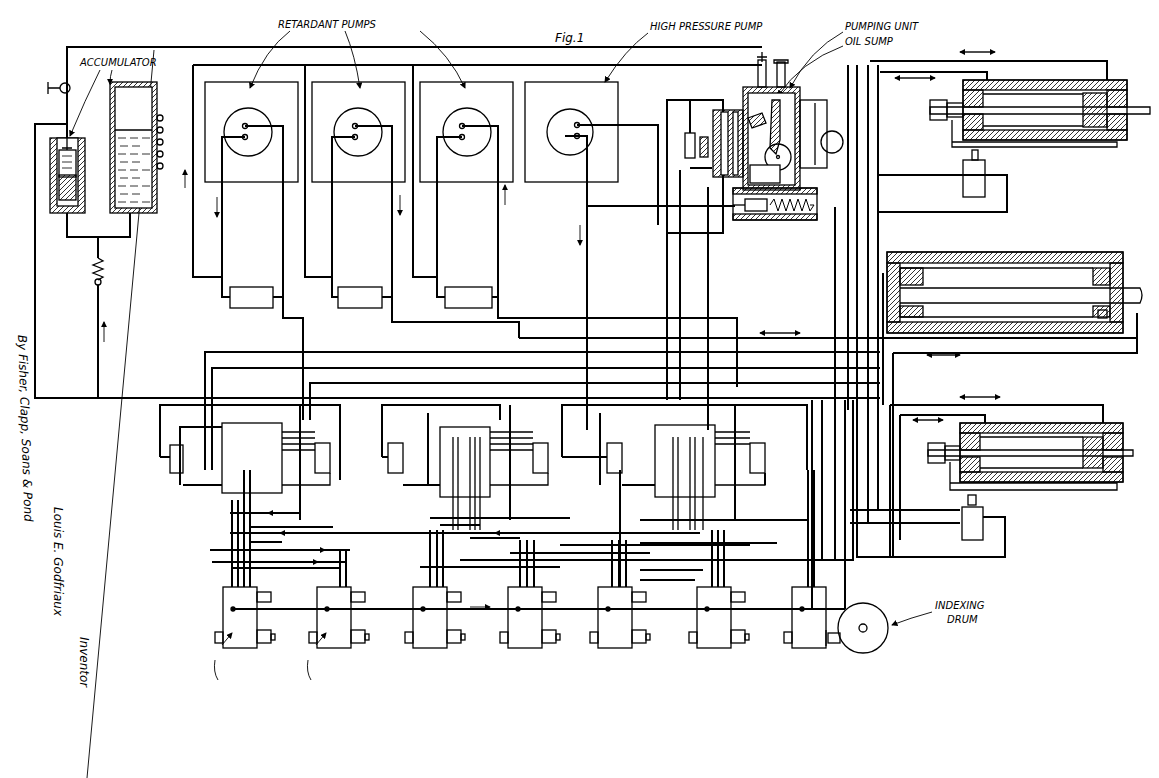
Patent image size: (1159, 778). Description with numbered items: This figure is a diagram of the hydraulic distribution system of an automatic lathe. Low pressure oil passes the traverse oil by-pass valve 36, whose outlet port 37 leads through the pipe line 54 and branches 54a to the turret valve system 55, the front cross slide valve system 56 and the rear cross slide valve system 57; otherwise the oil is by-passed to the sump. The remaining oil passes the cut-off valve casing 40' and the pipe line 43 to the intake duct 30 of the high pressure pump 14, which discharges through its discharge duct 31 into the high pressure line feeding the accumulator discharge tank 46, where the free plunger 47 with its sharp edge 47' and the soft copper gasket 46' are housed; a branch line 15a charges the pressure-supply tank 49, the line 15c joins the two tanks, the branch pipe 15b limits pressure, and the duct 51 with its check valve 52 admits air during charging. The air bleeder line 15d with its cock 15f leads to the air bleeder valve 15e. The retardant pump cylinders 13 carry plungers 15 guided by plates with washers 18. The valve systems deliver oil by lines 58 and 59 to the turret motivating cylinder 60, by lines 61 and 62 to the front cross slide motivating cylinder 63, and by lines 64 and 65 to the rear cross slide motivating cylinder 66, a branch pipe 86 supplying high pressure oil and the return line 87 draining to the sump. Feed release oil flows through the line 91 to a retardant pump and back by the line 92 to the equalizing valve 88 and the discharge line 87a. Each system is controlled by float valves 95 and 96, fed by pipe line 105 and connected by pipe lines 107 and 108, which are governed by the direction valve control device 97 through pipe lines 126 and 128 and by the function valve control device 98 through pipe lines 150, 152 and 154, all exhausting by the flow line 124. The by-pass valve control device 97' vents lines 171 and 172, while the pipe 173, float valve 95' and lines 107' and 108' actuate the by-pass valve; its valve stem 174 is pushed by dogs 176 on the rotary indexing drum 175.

The retardant pump cylinders 13 is at (255, 92).
The high pressure pump 14 is at (620, 90).
The plungers 15 is at (35, 300).
The branch line 15a is at (98, 330).
The branch pipe 15b is at (632, 208).
The line 15c is at (96, 243).
The air bleeder line 15d is at (151, 47).
The air bleeder valve 15e is at (757, 66).
The cock 15f is at (60, 84).
The washers 18 is at (101, 283).
The intake duct 30 is at (244, 124).
The discharge duct 31 is at (247, 140).
The traverse oil by-pass valve 36 is at (727, 112).
The outlet port 37 is at (712, 143).
The cut-off valve casing 40' is at (793, 225).
The pipe line 43 is at (658, 183).
The accumulator discharge tank 46 is at (83, 166).
The soft copper gasket 46' is at (87, 132).
The free plunger 47 is at (47, 175).
The sharp edge 47' is at (43, 187).
The pressure-supply tank 49 is at (110, 103).
The duct 51 is at (784, 222).
The check valve 52 is at (818, 200).
The pipe line 54 is at (712, 282).
The branches 54a is at (760, 518).
The turret valve system 55 is at (462, 427).
The front cross slide valve system 56 is at (660, 425).
The rear cross slide valve system 57 is at (240, 423).
The line 58 is at (535, 336).
The line 59 is at (618, 508).
The turret motivating cylinder 60 is at (1003, 252).
The line 61 is at (754, 548).
The line 62 is at (778, 543).
The front cross slide motivating cylinder 63 is at (1040, 423).
The line 64 is at (385, 383).
The line 65 is at (358, 368).
The rear cross slide motivating cylinder 66 is at (1043, 80).
The branch pipe 86 is at (300, 413).
The return line 87 is at (852, 118).
The discharge line 87a is at (193, 253).
The equalizing valve 88 is at (364, 297).
The line 91 is at (285, 318).
The line 92 is at (224, 237).
The float valve 95 is at (377, 462).
The float valve 95' is at (665, 132).
The float valve 96 is at (330, 445).
The direction valve control device 97 is at (531, 637).
The by-pass valve control device 97' is at (795, 613).
The function valve control device 98 is at (223, 618).
The pipe line 105 is at (160, 428).
The pipe line 107 is at (404, 496).
The line 107' is at (689, 107).
The pipe line 108 is at (463, 494).
The line 108' is at (670, 162).
The flow line 124 is at (476, 610).
The pipe line 126 is at (352, 570).
The pipe line 128 is at (282, 560).
The pipe line 150 is at (240, 546).
The pipe line 152 is at (360, 534).
The pipe line 154 is at (230, 528).
The line 171 is at (822, 417).
The line 172 is at (812, 472).
The pipe 173 is at (667, 282).
The valve stem 174 is at (834, 648).
The rotary indexing drum 175 is at (868, 612).
The dogs 176 is at (841, 644).